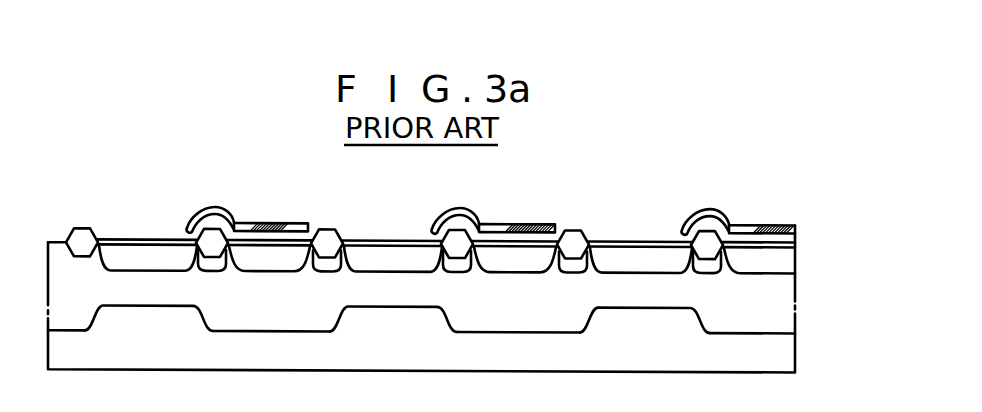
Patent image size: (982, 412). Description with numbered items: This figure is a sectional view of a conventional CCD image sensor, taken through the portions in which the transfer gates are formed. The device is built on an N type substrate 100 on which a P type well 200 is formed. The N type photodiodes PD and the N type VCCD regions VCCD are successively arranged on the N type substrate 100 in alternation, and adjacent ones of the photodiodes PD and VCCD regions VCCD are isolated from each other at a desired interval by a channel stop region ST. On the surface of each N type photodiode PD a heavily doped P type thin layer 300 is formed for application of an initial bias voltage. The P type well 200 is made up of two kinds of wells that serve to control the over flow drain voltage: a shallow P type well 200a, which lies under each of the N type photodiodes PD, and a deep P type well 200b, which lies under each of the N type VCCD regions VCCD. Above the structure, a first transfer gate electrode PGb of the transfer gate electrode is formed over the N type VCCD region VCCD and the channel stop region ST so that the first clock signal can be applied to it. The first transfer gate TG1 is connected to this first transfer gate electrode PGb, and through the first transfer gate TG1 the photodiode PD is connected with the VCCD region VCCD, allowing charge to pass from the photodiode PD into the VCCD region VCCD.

The N type substrate 100 is at (778, 359).
The P type well 200 is at (790, 319).
The shallow P type well 200a is at (381, 304).
The deep P type well 200b is at (497, 329).
The P+ type thin layer 300 is at (138, 241).
The channel stop region ST is at (334, 235).
The N type photodiode PD is at (148, 259).
The N type VCCD region VCCD is at (258, 261).
The first transfer gate TG1 is at (214, 211).
The first transfer gate electrode PGb is at (291, 223).